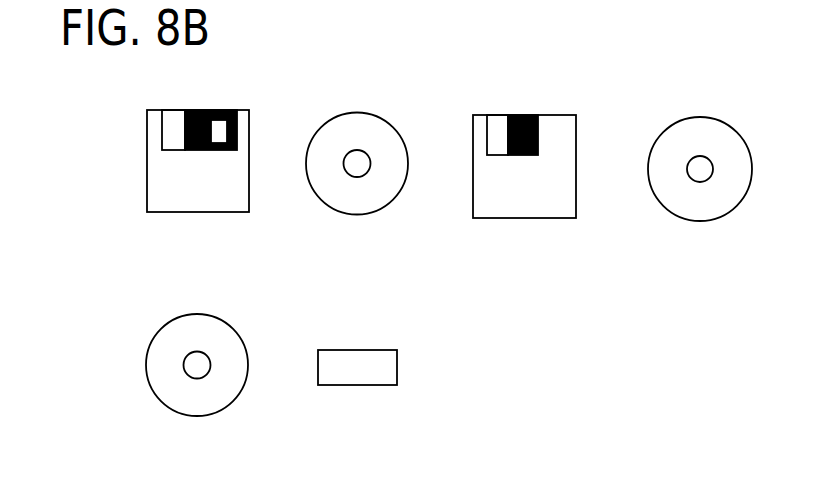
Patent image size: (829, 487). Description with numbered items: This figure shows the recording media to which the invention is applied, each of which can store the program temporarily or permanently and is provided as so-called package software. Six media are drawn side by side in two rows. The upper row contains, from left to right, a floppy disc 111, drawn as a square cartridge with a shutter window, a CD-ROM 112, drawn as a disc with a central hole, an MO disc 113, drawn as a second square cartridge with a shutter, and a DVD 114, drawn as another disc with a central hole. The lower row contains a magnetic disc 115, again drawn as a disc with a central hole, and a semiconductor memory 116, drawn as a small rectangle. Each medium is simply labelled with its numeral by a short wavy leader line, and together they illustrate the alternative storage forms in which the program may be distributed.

The floppy disc 111 is at (200, 212).
The CD-ROM 112 is at (363, 215).
The MO disc 113 is at (527, 218).
The DVD 114 is at (708, 220).
The magnetic disc 115 is at (213, 417).
The semiconductor memory 116 is at (362, 385).